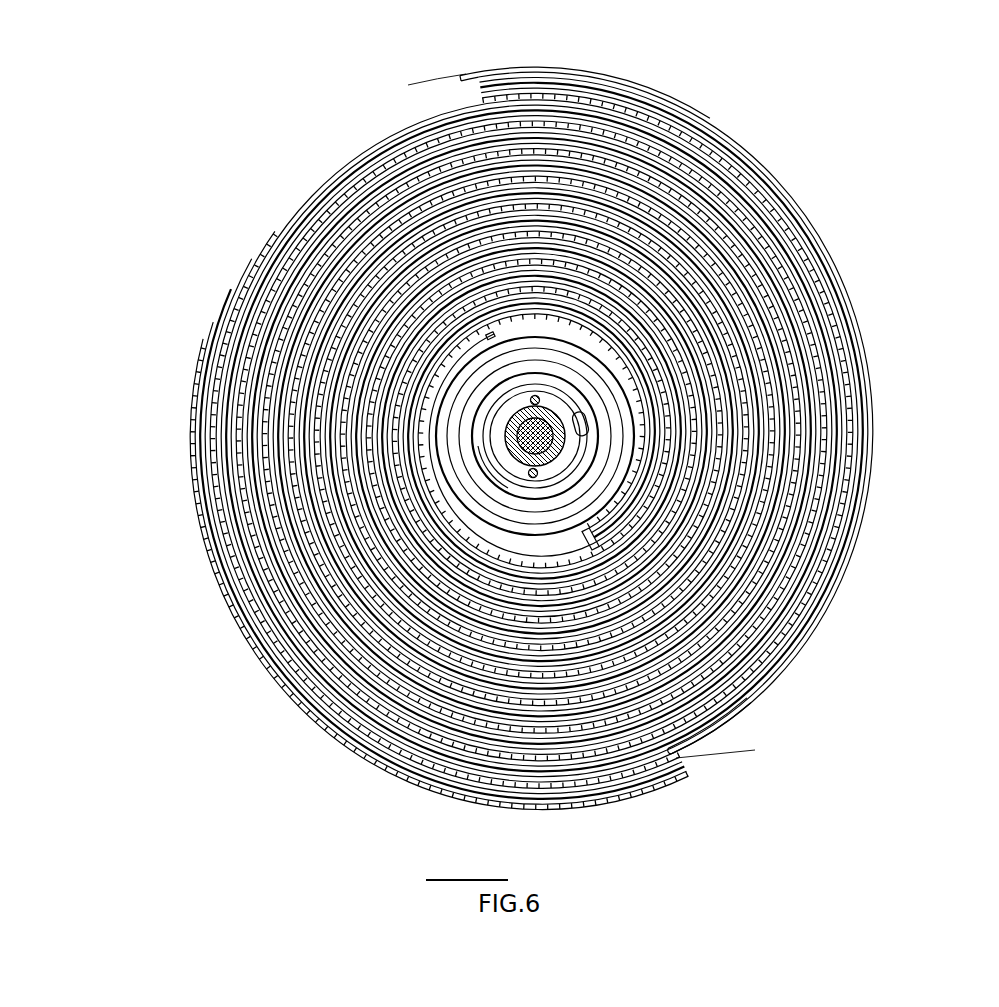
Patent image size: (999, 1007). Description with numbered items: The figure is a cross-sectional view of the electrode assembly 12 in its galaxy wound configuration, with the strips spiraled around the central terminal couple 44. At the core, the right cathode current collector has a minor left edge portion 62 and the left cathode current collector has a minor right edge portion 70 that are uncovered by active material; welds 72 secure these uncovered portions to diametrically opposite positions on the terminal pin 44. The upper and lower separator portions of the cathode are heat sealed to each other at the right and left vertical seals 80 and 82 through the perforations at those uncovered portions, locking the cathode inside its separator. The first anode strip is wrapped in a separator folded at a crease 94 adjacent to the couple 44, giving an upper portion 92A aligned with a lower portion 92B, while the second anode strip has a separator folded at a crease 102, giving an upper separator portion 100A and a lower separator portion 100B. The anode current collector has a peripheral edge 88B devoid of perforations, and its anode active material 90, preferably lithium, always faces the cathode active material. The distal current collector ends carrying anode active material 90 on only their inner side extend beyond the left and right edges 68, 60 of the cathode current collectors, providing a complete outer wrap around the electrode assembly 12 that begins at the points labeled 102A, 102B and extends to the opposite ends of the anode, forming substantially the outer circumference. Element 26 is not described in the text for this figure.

The electrode assembly 12 is at (912, 205).
The inner winding 26 is at (562, 410).
The terminal couple 44 is at (556, 433).
The right edge 60 is at (462, 90).
The minor left edge portion 62 is at (556, 463).
The left edge 68 is at (675, 742).
The minor right edge portion 70 is at (506, 389).
The welds 72 is at (547, 383).
The right vertical seal 80 is at (582, 416).
The left vertical seal 82 is at (470, 438).
The peripheral edge 88B is at (388, 138).
The anode active material 90 is at (642, 86).
The upper separator portion 92A is at (283, 208).
The lower separator portion 92B is at (262, 249).
The crease 94 is at (531, 390).
The upper separator portion 100A is at (796, 626).
The lower separator portion 100B is at (842, 566).
The crease 102 is at (578, 532).
The outer wrap starting point 102A is at (470, 106).
The outer wrap starting point 102B is at (690, 724).